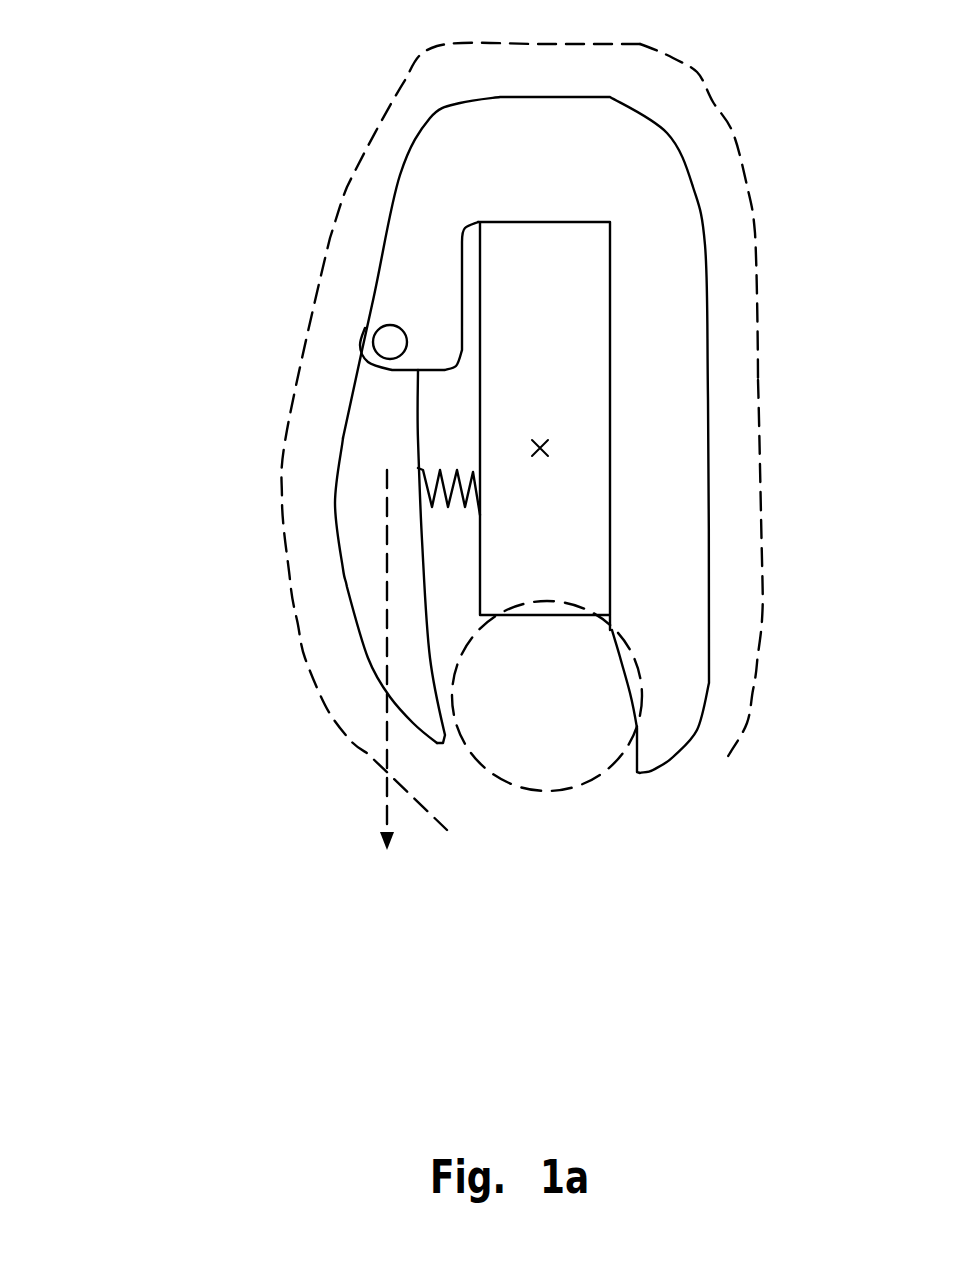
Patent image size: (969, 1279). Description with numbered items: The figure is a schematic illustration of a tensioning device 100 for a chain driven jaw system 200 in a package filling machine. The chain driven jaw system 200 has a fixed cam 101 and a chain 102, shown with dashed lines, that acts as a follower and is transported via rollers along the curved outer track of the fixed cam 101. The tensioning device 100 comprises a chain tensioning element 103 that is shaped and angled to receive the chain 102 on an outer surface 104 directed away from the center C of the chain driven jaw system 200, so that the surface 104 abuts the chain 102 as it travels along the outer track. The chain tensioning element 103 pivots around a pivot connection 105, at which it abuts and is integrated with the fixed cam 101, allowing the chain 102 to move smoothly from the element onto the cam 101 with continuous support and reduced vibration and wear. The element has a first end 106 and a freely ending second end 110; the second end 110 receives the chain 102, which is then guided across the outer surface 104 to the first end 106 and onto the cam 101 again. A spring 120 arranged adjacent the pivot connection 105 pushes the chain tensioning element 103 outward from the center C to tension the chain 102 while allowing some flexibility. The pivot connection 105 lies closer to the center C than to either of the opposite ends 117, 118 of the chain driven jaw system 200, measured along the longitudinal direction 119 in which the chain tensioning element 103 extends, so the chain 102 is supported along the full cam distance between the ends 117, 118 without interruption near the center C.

The tensioning device 100 is at (167, 263).
The chain driven jaw system 200 is at (476, 432).
The fixed cam 101 is at (400, 175).
The chain 102 is at (412, 75).
The chain tensioning element 103 is at (358, 490).
The outer surface 104 is at (345, 593).
The pivot connection 105 is at (377, 330).
The first end 106 is at (462, 397).
The second end 110 is at (480, 697).
The opposite end 117 is at (708, 45).
The opposite end 118 is at (783, 730).
The longitudinal direction 119 is at (387, 803).
The spring 120 is at (448, 500).
The center C is at (573, 473).